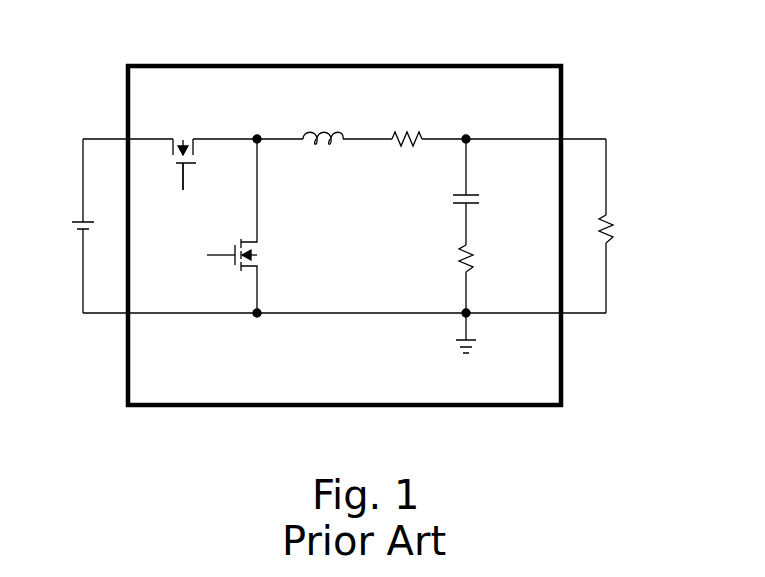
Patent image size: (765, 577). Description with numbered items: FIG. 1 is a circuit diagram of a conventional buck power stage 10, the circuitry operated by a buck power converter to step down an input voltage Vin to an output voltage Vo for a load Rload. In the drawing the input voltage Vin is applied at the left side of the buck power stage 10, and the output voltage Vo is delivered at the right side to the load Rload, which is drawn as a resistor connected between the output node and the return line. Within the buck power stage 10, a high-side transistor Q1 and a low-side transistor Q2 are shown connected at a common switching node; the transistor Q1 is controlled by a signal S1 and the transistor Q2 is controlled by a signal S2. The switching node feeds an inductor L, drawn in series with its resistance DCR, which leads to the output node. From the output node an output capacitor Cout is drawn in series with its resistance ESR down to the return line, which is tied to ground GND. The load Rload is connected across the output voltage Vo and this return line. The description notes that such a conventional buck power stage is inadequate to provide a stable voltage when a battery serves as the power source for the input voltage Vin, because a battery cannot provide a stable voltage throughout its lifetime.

The buck power stage 10 is at (345, 65).
The input voltage Vin is at (83, 212).
The high-side transistor Q1 is at (183, 151).
The first switching signal S1 is at (184, 194).
The low-side transistor Q2 is at (266, 226).
The second switching signal S2 is at (202, 257).
The inductor L is at (323, 124).
The inductor DC resistance DCR is at (400, 125).
The output capacitor Cout is at (432, 201).
The equivalent series resistance ESR is at (434, 259).
The ground GND is at (456, 349).
The output voltage Vo is at (609, 164).
The load Rload is at (640, 264).